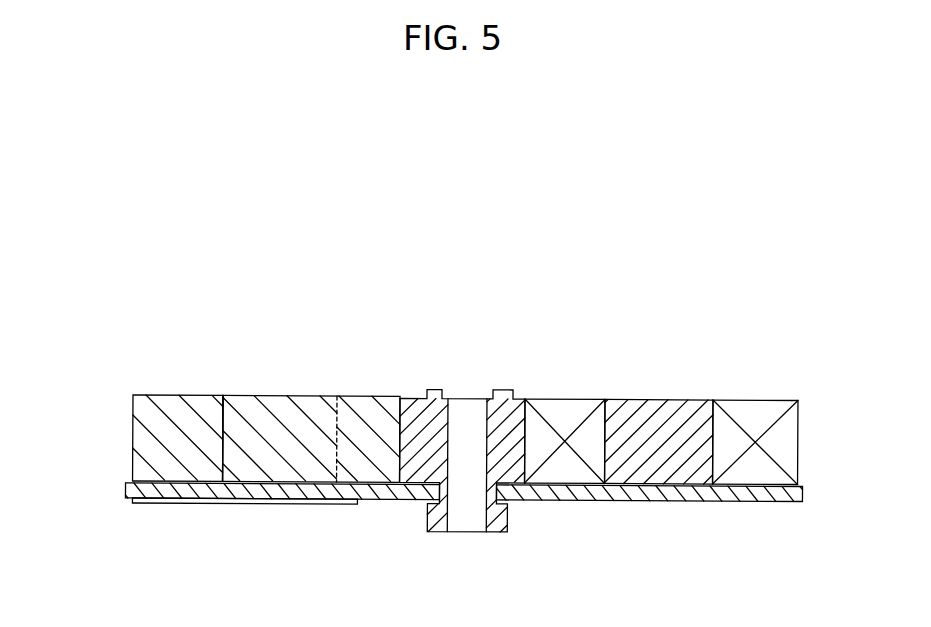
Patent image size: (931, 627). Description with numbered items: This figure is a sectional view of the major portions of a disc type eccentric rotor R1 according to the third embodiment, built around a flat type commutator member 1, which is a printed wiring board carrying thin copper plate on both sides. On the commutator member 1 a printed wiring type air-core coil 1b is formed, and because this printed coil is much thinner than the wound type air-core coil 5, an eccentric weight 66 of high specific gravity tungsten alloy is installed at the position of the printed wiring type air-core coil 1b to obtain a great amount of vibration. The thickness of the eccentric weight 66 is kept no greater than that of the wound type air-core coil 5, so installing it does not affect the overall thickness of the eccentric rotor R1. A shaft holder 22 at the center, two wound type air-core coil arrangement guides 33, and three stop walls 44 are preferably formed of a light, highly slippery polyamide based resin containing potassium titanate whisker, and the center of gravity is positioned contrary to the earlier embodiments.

The eccentric rotor R1 is at (117, 403).
The flat type commutator member 1 is at (755, 505).
The printed wiring type air-core coil 1b is at (224, 478).
The stop walls 44 is at (337, 423).
The eccentric weight 66 is at (369, 407).
The shaft holder 22 is at (484, 426).
The wound type air-core coil arrangement guides 33 is at (664, 418).
The wound type air-core coil 5 is at (757, 415).